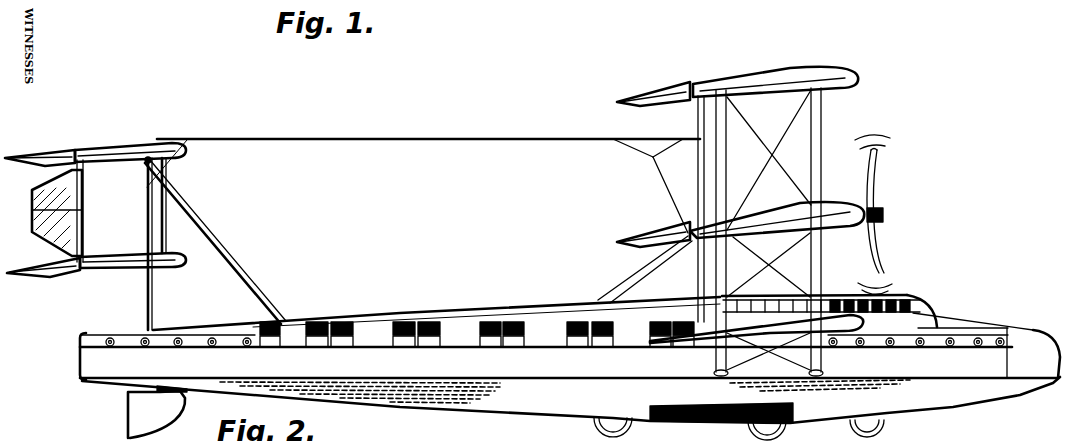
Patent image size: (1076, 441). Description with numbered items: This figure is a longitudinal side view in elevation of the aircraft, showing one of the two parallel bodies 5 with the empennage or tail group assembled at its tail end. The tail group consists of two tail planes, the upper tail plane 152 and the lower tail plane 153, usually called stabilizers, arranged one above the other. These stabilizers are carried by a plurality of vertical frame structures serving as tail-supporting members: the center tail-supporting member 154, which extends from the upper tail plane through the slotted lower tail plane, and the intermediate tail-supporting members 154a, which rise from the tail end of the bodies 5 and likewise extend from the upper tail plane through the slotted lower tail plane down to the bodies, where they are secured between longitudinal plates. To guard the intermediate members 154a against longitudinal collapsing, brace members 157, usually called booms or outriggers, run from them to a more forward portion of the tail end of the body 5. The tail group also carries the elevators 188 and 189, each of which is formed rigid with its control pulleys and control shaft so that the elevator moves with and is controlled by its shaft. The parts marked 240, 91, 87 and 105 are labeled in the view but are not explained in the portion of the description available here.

The body 5 is at (583, 372).
The supporting planes 240 is at (790, 70).
The upper balancing plane 91 is at (683, 83).
The middle balancing plane 87 is at (667, 232).
The tail plane 152 is at (136, 143).
The elevator 188 is at (28, 153).
The center tail-supporting member 154 is at (146, 228).
The elevator 189 is at (45, 273).
The vertical rudder 105 is at (33, 233).
The tail plane 153 is at (180, 254).
The intermediate tail-supporting member 154a is at (140, 300).
The brace member 157 is at (264, 297).